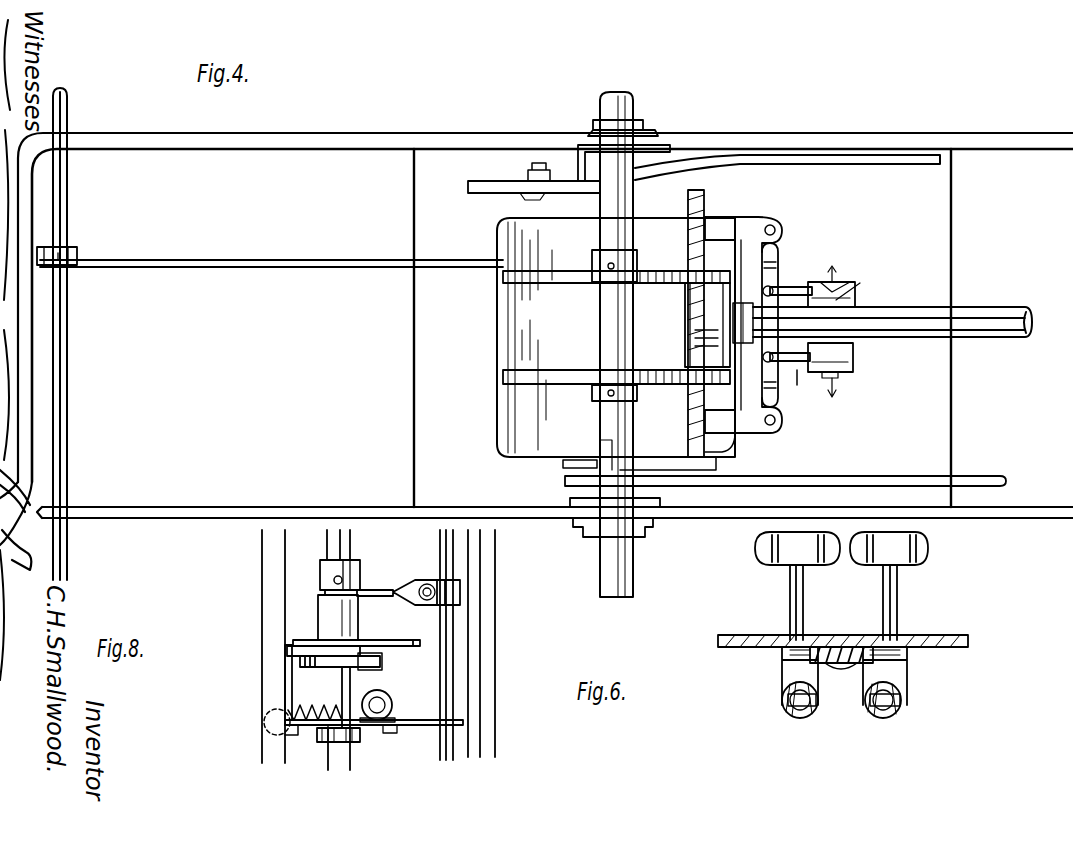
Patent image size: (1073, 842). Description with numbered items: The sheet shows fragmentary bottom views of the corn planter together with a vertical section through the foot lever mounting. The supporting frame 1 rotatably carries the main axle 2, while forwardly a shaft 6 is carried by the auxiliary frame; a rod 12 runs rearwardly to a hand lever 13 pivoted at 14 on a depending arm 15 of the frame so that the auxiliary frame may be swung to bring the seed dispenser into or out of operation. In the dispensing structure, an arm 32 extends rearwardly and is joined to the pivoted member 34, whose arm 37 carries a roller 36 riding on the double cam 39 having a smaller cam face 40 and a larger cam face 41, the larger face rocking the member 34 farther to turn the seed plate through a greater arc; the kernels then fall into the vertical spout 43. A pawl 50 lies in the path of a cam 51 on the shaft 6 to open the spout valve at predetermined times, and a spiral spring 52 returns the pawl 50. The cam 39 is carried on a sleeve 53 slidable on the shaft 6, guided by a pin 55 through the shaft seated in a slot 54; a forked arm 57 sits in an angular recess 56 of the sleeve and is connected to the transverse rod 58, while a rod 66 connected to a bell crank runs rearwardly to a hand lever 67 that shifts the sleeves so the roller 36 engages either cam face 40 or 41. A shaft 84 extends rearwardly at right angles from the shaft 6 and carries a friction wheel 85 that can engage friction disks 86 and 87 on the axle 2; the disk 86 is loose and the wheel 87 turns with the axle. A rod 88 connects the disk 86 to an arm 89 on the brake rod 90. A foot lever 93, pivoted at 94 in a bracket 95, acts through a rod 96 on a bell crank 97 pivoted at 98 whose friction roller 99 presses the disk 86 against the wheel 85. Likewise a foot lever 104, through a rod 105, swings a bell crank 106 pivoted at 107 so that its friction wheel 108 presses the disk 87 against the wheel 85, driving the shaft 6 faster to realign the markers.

In FIG. 4, the supporting frame 1 is at (175, 133).
In FIG. 6, the supporting frame 1 is at (945, 645).
In FIG. 4, the main axle 2 is at (636, 102).
In FIG. 8, the shaft 6 is at (330, 548).
In FIG. 4, the rod 12 is at (885, 155).
In FIG. 4, the hand lever 13 is at (538, 181).
In FIG. 4, the pivotal connection 14 is at (540, 163).
In FIG. 4, the depending arm 15 is at (572, 150).
In FIG. 8, the arm 32 is at (456, 665).
In FIG. 8, the pivoted member 34 is at (320, 628).
In FIG. 8, the roller 36 is at (383, 662).
In FIG. 8, the arm 37 is at (360, 640).
In FIG. 8, the double cam 39 is at (302, 661).
In FIG. 8, the cam face 40 is at (300, 650).
In FIG. 8, the cam face 41 is at (340, 672).
In FIG. 8, the spout 43 is at (392, 708).
In FIG. 8, the pawl 50 is at (283, 735).
In FIG. 8, the cam 51 is at (362, 740).
In FIG. 8, the spiral spring 52 is at (310, 725).
In FIG. 8, the sleeve 53 is at (360, 578).
In FIG. 8, the slot 54 is at (335, 578).
In FIG. 8, the pin 55 is at (400, 585).
In FIG. 8, the angular recess 56 is at (322, 592).
In FIG. 8, the arm 57 is at (455, 566).
In FIG. 8, the rod 58 is at (456, 640).
In FIG. 4, the rod 66 is at (985, 476).
In FIG. 4, the hand lever 67 is at (604, 456).
In FIG. 4, the shaft 84 is at (976, 318).
In FIG. 4, the friction wheel 85 is at (702, 345).
In FIG. 4, the friction disk 86 is at (545, 280).
In FIG. 4, the friction wheel 87 is at (530, 381).
In FIG. 4, the rod 88 is at (250, 269).
In FIG. 4, the arm 89 is at (76, 255).
In FIG. 4, the rod 90 is at (68, 430).
In FIG. 6, the foot lever 93 is at (898, 602).
In FIG. 4, the pivotal support 94 is at (858, 283).
In FIG. 6, the pivotal support 94 is at (790, 712).
In FIG. 4, the bracket 95 is at (856, 297).
In FIG. 6, the bracket 95 is at (843, 640).
In FIG. 4, the rod 96 is at (790, 290).
In FIG. 4, the bell crank 97 is at (752, 228).
In FIG. 4, the pivotal mounting 98 is at (774, 226).
In FIG. 4, the friction roller 99 is at (705, 196).
In FIG. 6, the foot lever 104 is at (790, 600).
In FIG. 4, the rod 105 is at (797, 386).
In FIG. 6, the rod 105 is at (785, 655).
In FIG. 4, the bell crank 106 is at (742, 440).
In FIG. 4, the pivotal mounting 107 is at (774, 424).
In FIG. 4, the friction wheel 108 is at (708, 480).